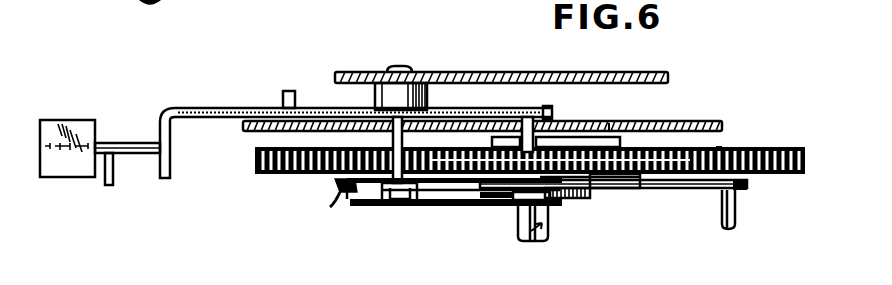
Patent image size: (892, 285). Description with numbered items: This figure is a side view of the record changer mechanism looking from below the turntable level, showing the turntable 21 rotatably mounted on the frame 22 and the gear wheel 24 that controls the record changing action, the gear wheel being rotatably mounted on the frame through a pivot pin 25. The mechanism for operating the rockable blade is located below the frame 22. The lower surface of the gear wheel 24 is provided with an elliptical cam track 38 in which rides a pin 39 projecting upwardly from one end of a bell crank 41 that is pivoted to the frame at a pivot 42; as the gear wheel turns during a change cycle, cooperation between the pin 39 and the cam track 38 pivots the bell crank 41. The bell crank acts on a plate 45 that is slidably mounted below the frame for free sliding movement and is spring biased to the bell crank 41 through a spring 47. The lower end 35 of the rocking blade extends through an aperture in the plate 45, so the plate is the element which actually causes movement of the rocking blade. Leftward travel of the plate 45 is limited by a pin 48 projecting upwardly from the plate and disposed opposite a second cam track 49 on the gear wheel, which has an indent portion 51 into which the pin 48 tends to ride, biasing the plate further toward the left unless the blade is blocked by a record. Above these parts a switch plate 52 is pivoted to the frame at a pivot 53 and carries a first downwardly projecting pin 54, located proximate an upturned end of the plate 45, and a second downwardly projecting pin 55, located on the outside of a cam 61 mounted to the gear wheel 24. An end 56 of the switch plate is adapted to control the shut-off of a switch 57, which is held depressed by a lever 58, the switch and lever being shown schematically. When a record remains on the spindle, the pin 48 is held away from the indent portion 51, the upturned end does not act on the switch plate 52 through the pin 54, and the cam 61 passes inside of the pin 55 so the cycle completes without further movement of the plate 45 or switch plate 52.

The turntable 21 is at (538, 72).
The frame 22 is at (716, 122).
The gear wheel 24 is at (255, 163).
The pivot pin 25 is at (540, 241).
The lower end of the rocking blade 35 is at (204, 2).
The elliptical cam track 38 is at (720, 146).
The pin 39 is at (640, 188).
The bell crank 41 is at (668, 188).
The pivot 42 is at (735, 218).
The plate 45 is at (433, 207).
The spring 47 is at (343, 203).
The pin 48 is at (550, 206).
The second cam track 49 is at (578, 197).
The indent portion 51 is at (503, 198).
The switch plate 52 is at (237, 107).
The pivot 53 is at (282, 93).
The first downwardly projecting pin 54 is at (395, 142).
The second downwardly projecting pin 55 is at (528, 117).
The end of the switch plate 56 is at (157, 168).
The switch 57 is at (60, 170).
The lever 58 is at (131, 143).
The cam 61 is at (611, 123).